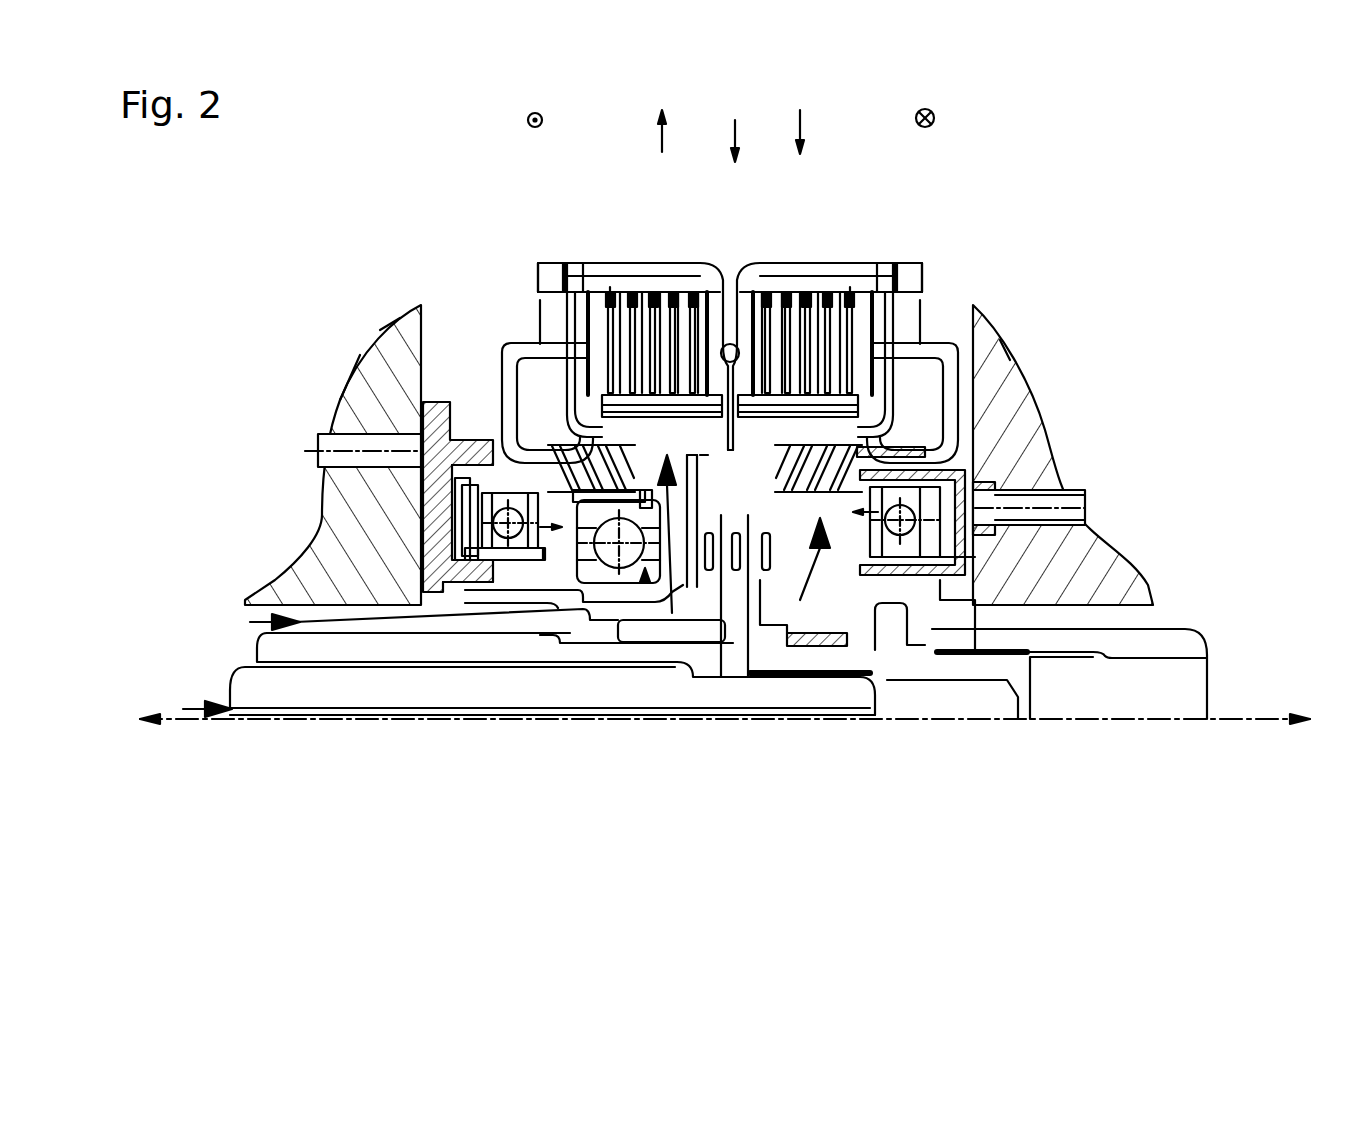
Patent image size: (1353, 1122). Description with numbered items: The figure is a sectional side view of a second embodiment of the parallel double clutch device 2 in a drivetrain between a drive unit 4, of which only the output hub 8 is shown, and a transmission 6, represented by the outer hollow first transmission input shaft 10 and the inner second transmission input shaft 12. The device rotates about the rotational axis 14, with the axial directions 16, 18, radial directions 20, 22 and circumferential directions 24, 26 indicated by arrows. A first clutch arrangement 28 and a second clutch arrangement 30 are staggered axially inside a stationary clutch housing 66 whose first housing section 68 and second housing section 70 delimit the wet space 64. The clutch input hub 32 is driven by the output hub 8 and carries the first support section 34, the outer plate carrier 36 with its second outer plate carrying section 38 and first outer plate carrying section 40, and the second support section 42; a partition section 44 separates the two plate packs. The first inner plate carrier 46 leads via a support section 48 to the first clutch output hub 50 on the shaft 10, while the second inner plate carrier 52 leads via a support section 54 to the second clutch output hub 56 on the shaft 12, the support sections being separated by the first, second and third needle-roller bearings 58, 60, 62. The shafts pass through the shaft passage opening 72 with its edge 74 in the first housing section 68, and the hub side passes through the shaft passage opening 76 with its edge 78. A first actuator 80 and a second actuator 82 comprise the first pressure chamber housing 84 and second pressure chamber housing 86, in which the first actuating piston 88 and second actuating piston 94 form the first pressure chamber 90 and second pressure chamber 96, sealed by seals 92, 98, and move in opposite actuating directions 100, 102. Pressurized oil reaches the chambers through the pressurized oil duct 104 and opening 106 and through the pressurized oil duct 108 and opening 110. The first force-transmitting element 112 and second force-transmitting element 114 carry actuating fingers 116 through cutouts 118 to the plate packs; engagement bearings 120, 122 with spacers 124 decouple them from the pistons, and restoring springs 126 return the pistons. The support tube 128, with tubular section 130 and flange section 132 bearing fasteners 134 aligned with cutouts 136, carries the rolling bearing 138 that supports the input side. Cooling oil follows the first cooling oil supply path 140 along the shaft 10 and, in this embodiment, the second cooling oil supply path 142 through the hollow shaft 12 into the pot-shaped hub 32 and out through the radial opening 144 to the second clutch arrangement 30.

The parallel double clutch device 2 is at (734, 123).
The drive unit 4 is at (1251, 463).
The transmission 6 is at (134, 463).
The output hub 8 is at (1160, 643).
The first transmission input shaft 10 is at (282, 650).
The second transmission input shaft 12 is at (338, 692).
The rotational axis 14 is at (263, 722).
The axial direction 16 is at (1273, 722).
The axial direction 18 is at (185, 723).
The radial direction 20 is at (660, 140).
The radial direction 22 is at (802, 124).
The circumferential direction 24 is at (527, 121).
The circumferential direction 26 is at (934, 120).
The first clutch arrangement 28 is at (615, 300).
The second clutch arrangement 30 is at (800, 330).
The clutch input hub 32 is at (1023, 667).
The first support section 34 is at (950, 455).
The outer plate carrier 36 is at (927, 275).
The second outer plate carrying section 38 is at (857, 275).
The first outer plate carrying section 40 is at (585, 268).
The second support section 42 is at (542, 367).
The partition section 44 is at (731, 330).
The first inner plate carrier 46 is at (640, 330).
The support section 48 is at (715, 340).
The first clutch output hub 50 is at (680, 632).
The second inner plate carrier 52 is at (813, 320).
The support section 54 is at (746, 330).
The second clutch output hub 56 is at (737, 575).
The first needle-roller bearing 58 is at (768, 575).
The second needle-roller bearing 60 is at (798, 660).
The third needle-roller bearing 62 is at (712, 572).
The wet space 64 is at (530, 388).
The clutch housing 66 is at (395, 315).
The first housing section 68 is at (400, 380).
The second housing section 70 is at (1007, 368).
The shaft passage opening 72 is at (332, 628).
The edge 74 is at (350, 607).
The shaft passage opening 76 is at (1048, 640).
The edge 78 is at (1112, 608).
The first actuator 80 is at (448, 332).
The second actuator 82 is at (950, 458).
The first pressure chamber housing 84 is at (437, 413).
The second pressure chamber housing 86 is at (957, 478).
The first actuating piston 88 is at (518, 565).
The first pressure chamber 90 is at (460, 538).
The seals 92 is at (450, 470).
The second actuating piston 94 is at (935, 572).
The second pressure chamber 96 is at (970, 558).
The seals 98 is at (955, 476).
The actuating direction 100 is at (548, 575).
The actuating direction 102 is at (870, 600).
The pressurized oil duct 104 is at (347, 442).
The opening 106 is at (440, 510).
The pressurized oil duct 108 is at (1027, 510).
The opening 110 is at (1060, 493).
The first force-transmitting element 112 is at (400, 380).
The second force-transmitting element 114 is at (975, 325).
The actuating fingers 116 is at (553, 345).
The cutouts 118 is at (565, 355).
The engagement bearing 120 is at (503, 588).
The engagement bearing 122 is at (943, 580).
The spacer 124 is at (470, 527).
The restoring spring 126 is at (555, 455).
The support tube 128 is at (628, 593).
The tubular section 130 is at (598, 588).
The flange section 132 is at (693, 520).
The fasteners 134 is at (668, 330).
The cutouts 136 is at (718, 478).
The rolling bearing 138 is at (678, 628).
The first cooling oil supply path 140 is at (283, 618).
The second cooling oil supply path 142 is at (200, 708).
The radial opening 144 is at (885, 660).